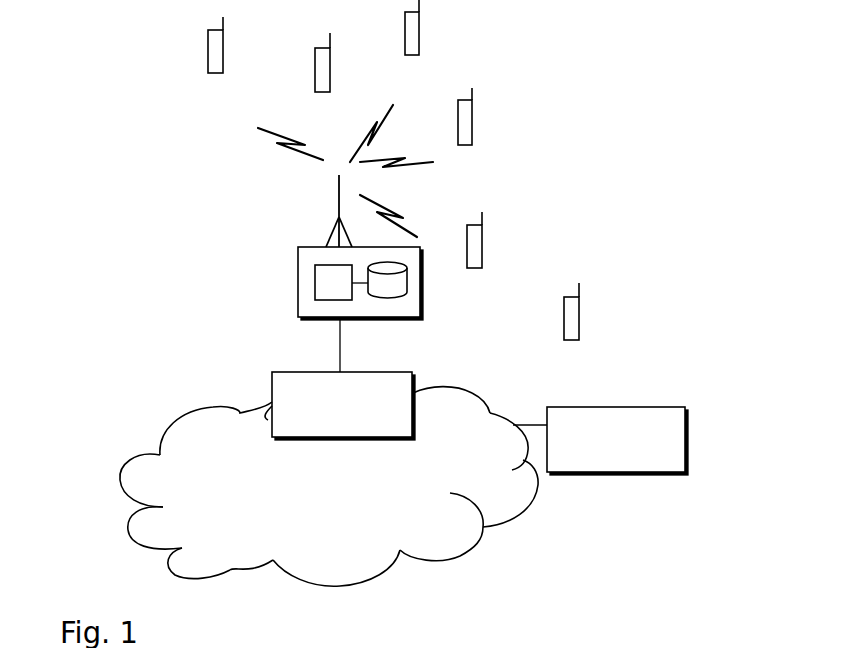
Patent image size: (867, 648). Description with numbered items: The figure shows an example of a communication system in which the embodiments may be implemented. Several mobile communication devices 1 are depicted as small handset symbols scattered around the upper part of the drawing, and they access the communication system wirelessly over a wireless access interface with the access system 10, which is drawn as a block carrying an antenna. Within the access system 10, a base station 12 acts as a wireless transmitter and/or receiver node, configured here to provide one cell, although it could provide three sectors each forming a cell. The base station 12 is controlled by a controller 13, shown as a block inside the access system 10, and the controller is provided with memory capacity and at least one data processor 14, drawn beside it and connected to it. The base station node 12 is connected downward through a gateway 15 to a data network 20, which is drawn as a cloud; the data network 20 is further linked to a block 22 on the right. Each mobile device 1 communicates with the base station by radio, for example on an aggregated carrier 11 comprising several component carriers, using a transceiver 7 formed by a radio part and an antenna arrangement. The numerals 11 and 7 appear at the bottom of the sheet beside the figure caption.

The mobile communication device 1 is at (477, 247).
The access system 10 is at (186, 192).
The base station 12 is at (335, 214).
The controller 13 is at (297, 266).
The data processor 14 is at (315, 282).
The gateway 15 is at (272, 387).
The data network 20 is at (163, 445).
The server 22 is at (638, 423).
The aggregated carrier 11 is at (489, 629).
The transceiver 7 is at (544, 629).